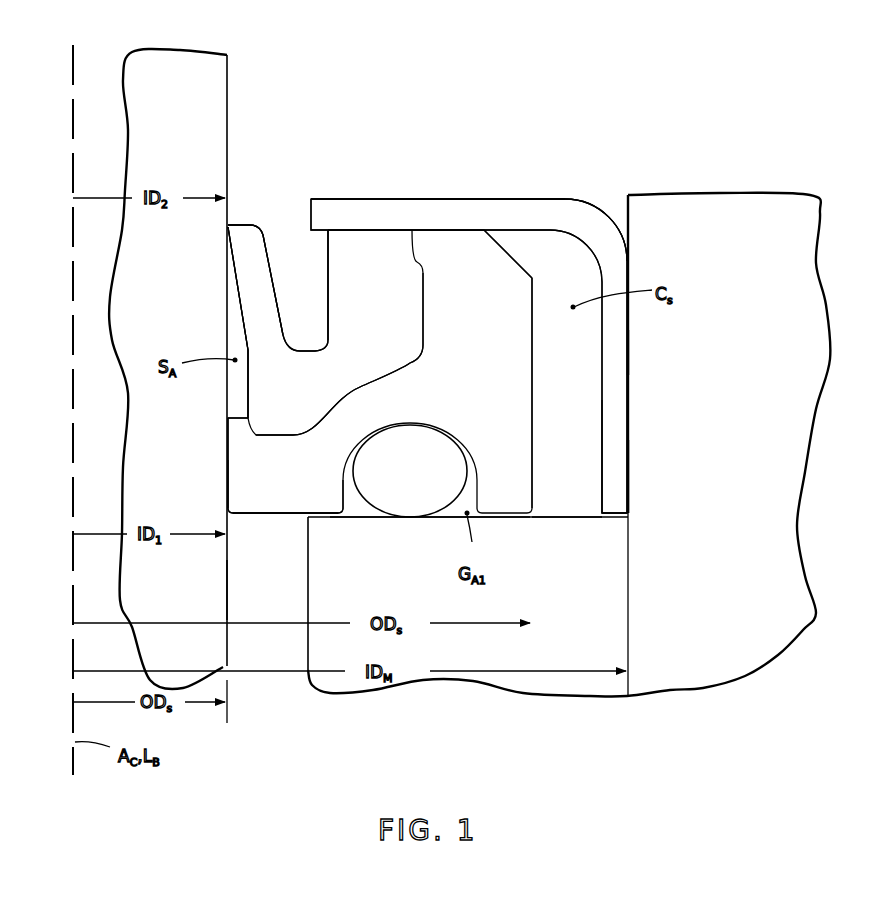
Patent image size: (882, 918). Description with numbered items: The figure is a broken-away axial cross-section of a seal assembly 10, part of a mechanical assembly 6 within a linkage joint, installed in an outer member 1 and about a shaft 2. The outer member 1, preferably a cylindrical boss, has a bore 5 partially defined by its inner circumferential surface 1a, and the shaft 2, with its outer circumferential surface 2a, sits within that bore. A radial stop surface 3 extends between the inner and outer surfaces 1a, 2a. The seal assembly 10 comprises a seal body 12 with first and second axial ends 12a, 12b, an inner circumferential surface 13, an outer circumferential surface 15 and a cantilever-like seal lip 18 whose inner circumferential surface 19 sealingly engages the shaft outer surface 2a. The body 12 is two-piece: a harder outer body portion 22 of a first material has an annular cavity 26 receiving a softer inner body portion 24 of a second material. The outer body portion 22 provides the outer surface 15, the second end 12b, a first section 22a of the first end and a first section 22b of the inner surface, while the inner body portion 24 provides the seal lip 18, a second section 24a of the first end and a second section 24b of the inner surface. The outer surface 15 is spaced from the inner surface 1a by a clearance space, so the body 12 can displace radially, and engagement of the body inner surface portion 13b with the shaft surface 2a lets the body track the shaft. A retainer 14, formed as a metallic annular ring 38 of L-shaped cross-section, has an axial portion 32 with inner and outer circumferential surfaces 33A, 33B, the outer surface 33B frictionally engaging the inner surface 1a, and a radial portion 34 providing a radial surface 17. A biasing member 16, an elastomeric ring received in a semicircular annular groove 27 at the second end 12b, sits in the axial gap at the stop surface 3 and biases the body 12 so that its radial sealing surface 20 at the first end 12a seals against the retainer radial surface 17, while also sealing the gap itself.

The outer member 1 is at (738, 160).
The inner circumferential surface 1a is at (630, 358).
The shaft 2 is at (234, 94).
The outer circumferential surface 2a is at (223, 604).
The radial stop surface 3 is at (562, 511).
The bore 5 is at (270, 578).
The mechanical assembly 6 is at (448, 52).
The seal assembly 10 is at (582, 120).
The seal body 12 is at (197, 316).
The first axial end 12a is at (417, 226).
The second axial end 12b is at (335, 520).
The inner circumferential surface 13 is at (226, 454).
The body inner surface portion 13b is at (228, 427).
The retainer 14 is at (450, 163).
The outer circumferential surface 15 is at (532, 413).
The biasing member 16 is at (417, 523).
The radial surface 17 is at (540, 234).
The seal lip 18 is at (243, 248).
The inner circumferential surface 19 is at (232, 223).
The radial sealing surface 20 is at (377, 226).
The outer body portion 22 is at (532, 292).
The first section of the first axial end 22a is at (447, 230).
The first section of the body inner surface 22b is at (232, 478).
The inner body portion 24 is at (347, 233).
The second section of the first axial end 24a is at (391, 231).
The second section of the body inner surface 24b is at (252, 388).
The annular cavity 26 is at (422, 352).
The annular groove 27 is at (410, 428).
The axial portion 32 is at (632, 477).
The inner circumferential surface 33A is at (602, 451).
The outer circumferential surface 33B is at (630, 505).
The radial portion 34 is at (472, 198).
The annular ring 38 is at (589, 198).